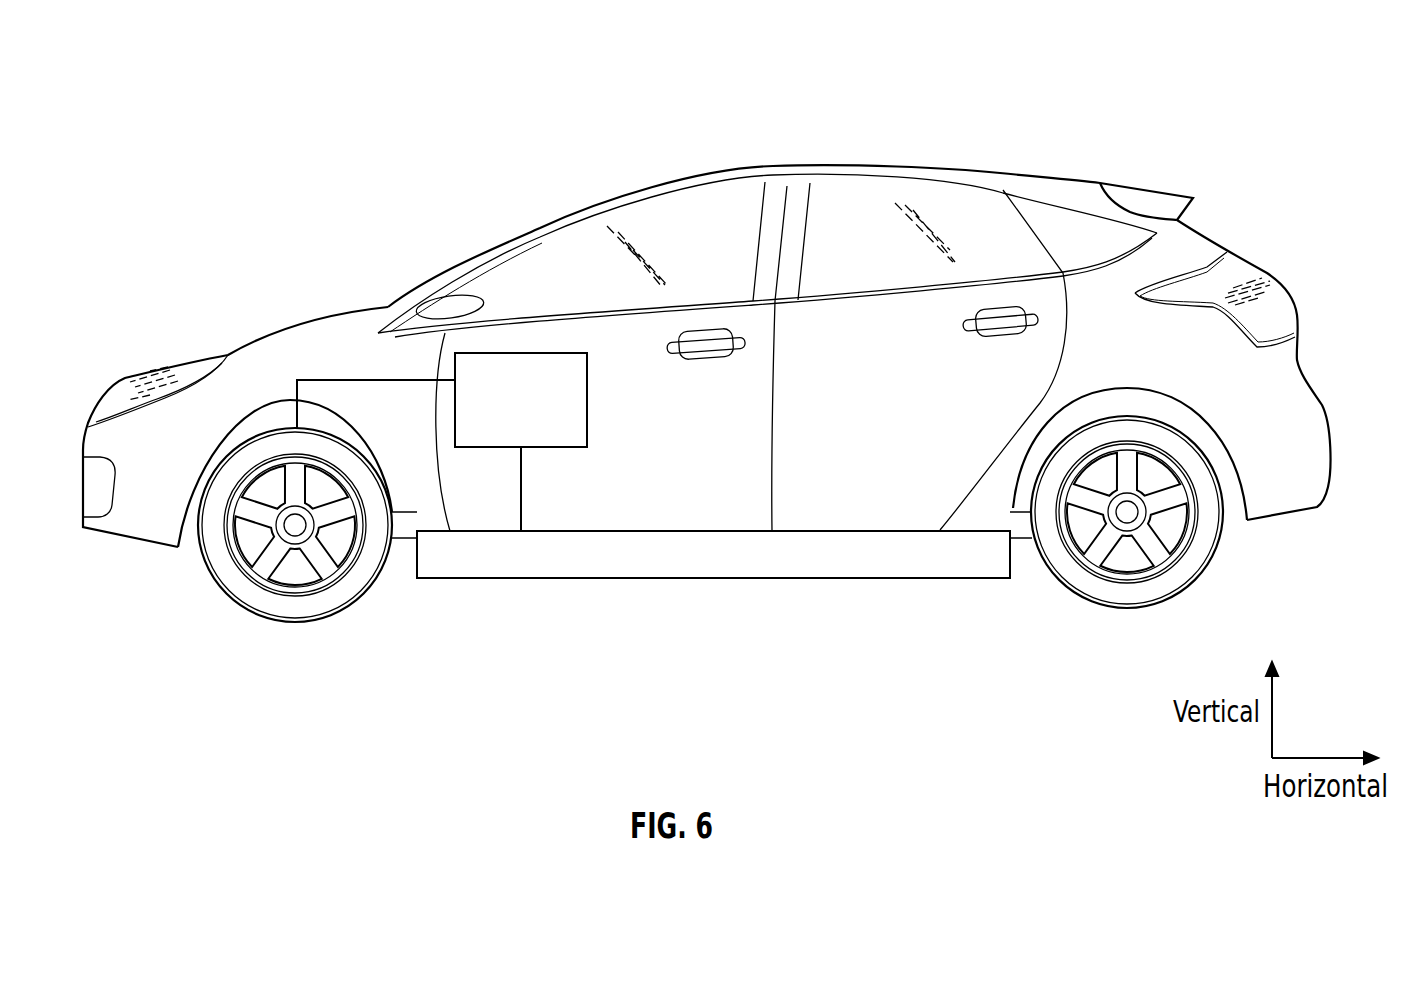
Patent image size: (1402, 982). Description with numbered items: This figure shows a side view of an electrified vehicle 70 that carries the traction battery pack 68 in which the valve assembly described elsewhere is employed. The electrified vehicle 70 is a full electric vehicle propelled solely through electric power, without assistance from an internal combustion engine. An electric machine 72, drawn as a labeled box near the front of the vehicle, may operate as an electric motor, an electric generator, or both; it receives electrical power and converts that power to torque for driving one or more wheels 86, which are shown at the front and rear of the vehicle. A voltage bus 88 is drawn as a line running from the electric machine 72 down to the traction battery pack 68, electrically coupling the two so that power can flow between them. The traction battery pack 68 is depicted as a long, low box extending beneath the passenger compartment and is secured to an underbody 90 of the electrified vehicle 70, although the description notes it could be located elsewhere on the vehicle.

The electrified vehicle 70 is at (1040, 124).
The electric machine 72 is at (587, 398).
The traction battery pack 68 is at (977, 567).
The wheels 86 is at (235, 600).
The voltage bus 88 is at (522, 509).
The underbody 90 is at (449, 533).